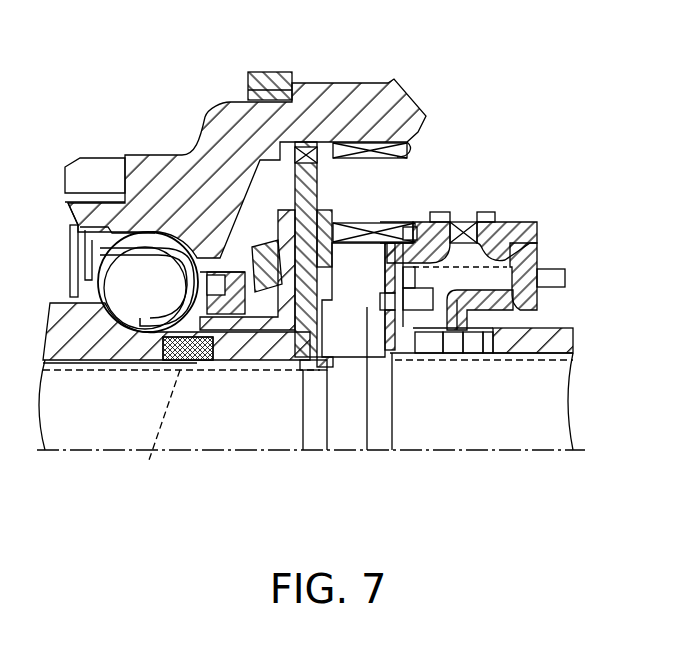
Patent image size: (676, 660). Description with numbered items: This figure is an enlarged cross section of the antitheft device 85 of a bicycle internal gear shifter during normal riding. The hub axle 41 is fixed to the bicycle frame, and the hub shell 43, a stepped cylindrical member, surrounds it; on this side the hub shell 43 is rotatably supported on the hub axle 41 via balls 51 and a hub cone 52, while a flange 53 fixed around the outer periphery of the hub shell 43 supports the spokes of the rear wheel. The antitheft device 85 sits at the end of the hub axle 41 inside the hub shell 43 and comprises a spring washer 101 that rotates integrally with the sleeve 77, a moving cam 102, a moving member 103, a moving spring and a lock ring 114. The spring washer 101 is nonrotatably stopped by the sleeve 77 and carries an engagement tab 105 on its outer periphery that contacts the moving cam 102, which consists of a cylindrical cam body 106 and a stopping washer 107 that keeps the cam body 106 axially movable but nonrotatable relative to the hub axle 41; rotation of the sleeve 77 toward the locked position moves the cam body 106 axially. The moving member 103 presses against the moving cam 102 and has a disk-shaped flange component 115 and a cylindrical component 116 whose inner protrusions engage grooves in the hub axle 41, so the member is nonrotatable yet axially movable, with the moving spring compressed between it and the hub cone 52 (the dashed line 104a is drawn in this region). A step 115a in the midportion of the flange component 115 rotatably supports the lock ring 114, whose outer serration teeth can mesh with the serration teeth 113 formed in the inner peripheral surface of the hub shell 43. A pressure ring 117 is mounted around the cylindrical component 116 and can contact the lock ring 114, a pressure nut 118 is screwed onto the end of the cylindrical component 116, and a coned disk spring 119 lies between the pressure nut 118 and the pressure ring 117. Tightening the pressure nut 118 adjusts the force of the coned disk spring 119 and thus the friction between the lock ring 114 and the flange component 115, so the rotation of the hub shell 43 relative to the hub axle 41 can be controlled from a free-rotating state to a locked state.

The hub axle 41 is at (537, 427).
The hub shell 43 is at (342, 95).
The balls 51 is at (128, 297).
The hub cone 52 is at (87, 350).
The flange 53 is at (250, 85).
The sleeve 77 is at (542, 330).
The antitheft device 85 is at (516, 192).
The spring washer 101 is at (537, 253).
The moving cam 102 is at (397, 210).
The moving member 103 is at (303, 364).
The passage 104a is at (150, 435).
The engagement tab 105 is at (487, 227).
The cam body 106 is at (455, 220).
The stopping washer 107 is at (343, 322).
The serration teeth 113 is at (405, 157).
The lock ring 114 is at (308, 165).
The flange component 115 is at (318, 297).
The step 115a is at (367, 228).
The cylindrical component 116 is at (228, 360).
The pressure ring 117 is at (270, 333).
The pressure nut 118 is at (227, 273).
The coned disk spring 119 is at (270, 246).